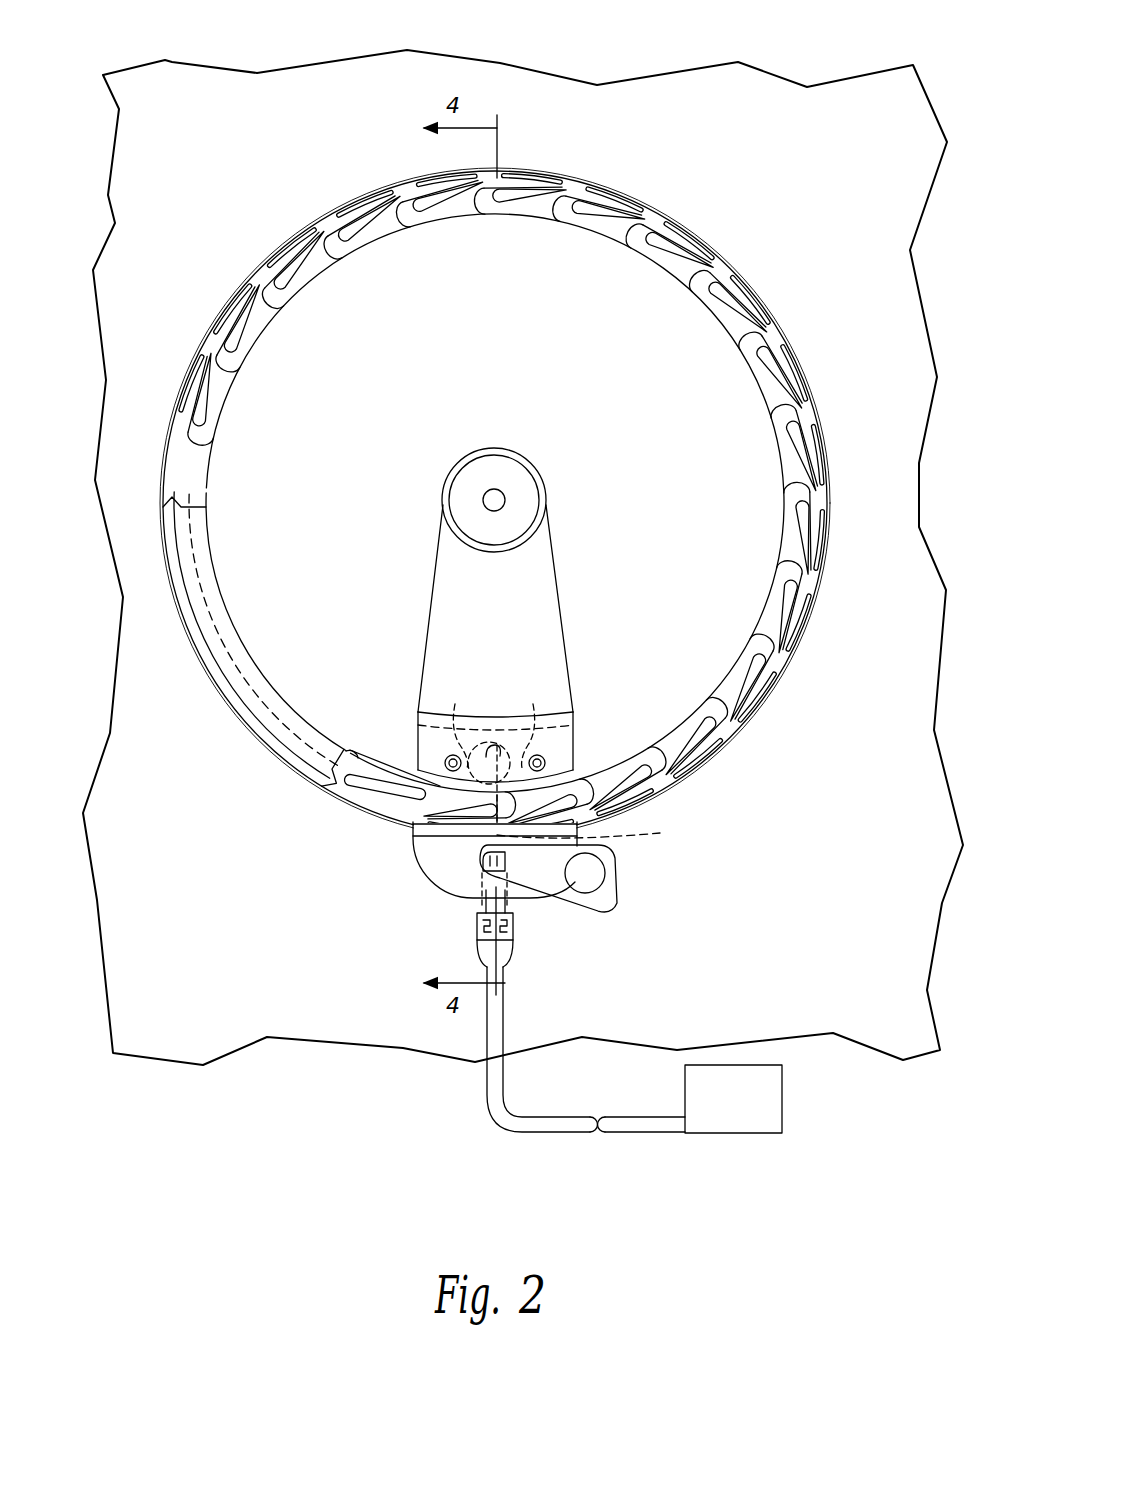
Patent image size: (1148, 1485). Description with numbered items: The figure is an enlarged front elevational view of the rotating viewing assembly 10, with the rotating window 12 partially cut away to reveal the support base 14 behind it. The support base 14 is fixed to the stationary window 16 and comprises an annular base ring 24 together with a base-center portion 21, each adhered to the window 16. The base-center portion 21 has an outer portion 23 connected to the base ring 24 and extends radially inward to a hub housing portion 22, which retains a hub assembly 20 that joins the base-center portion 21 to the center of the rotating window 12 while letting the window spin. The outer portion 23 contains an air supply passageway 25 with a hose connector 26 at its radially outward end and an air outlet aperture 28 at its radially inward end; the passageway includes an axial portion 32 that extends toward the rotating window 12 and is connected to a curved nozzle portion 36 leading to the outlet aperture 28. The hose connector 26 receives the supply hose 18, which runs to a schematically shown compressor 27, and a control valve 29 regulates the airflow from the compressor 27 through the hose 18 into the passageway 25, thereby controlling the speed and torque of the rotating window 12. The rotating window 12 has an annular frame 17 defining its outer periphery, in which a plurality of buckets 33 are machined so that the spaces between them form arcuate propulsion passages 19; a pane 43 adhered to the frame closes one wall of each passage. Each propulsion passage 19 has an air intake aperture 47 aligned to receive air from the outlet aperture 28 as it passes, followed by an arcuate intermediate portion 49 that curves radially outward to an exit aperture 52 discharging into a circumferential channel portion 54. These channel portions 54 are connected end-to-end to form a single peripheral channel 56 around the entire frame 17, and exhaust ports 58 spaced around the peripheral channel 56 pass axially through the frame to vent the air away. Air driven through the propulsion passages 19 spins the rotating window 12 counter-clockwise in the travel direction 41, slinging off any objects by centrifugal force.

The rotating viewing assembly 10 is at (668, 170).
The rotating window 12 is at (504, 490).
The support base 14 is at (412, 768).
The stationary window 16 is at (222, 78).
The annular frame 17 is at (812, 378).
The supply hose 18 is at (506, 1120).
The propulsion passages 19 is at (810, 505).
The hub assembly 20 is at (498, 450).
The base-center portion 21 is at (516, 623).
The hub housing portion 22 is at (556, 546).
The outer portion 23 is at (516, 906).
The annular base ring 24 is at (256, 740).
The air supply passageway 25 is at (582, 830).
The hose connector 26 is at (506, 906).
The compressor 27 is at (774, 1122).
The air outlet aperture 28 is at (530, 722).
The control valve 29 is at (620, 880).
The axial portion 32 is at (485, 722).
The buckets 33 is at (800, 460).
The curved nozzle portion 36 is at (460, 722).
The travel direction 41 is at (818, 668).
The pane 43 is at (690, 300).
The air intake aperture 47 is at (292, 302).
The arcuate intermediate portion 49 is at (268, 292).
The exit aperture 52 is at (282, 252).
The circumferential channel portion 54 is at (342, 214).
The peripheral channel 56 is at (500, 185).
The exhaust ports 58 is at (307, 240).